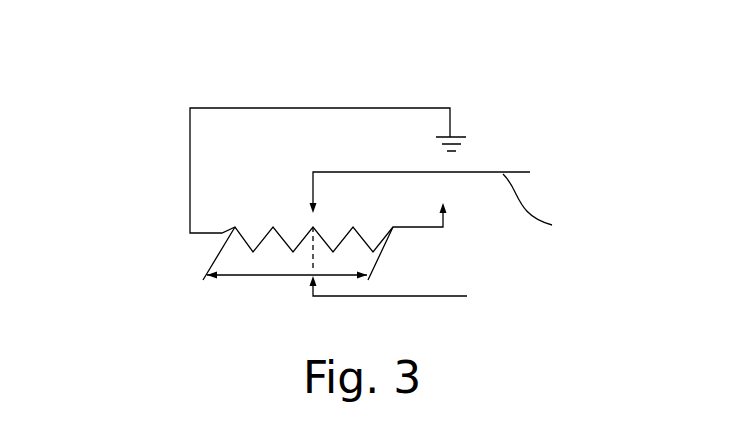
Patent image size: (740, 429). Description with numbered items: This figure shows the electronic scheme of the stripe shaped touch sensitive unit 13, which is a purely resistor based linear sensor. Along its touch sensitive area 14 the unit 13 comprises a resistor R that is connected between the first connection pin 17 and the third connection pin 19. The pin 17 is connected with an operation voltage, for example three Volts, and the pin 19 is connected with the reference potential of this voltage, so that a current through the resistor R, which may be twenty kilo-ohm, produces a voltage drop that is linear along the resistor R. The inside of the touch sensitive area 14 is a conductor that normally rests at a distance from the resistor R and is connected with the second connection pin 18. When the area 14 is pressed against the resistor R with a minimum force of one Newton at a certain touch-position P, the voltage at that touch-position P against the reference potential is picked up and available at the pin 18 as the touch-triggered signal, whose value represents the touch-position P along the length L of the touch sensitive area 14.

The stripe shaped touch sensitive unit 13 is at (140, 97).
The touch sensitive area 14 is at (355, 162).
The first connection pin 17 is at (446, 213).
The second connection pin 18 is at (530, 171).
The third connection pin 19 is at (457, 137).
The resistor R is at (243, 225).
The length of the touch sensitive area L is at (277, 277).
The touch-position P is at (398, 269).